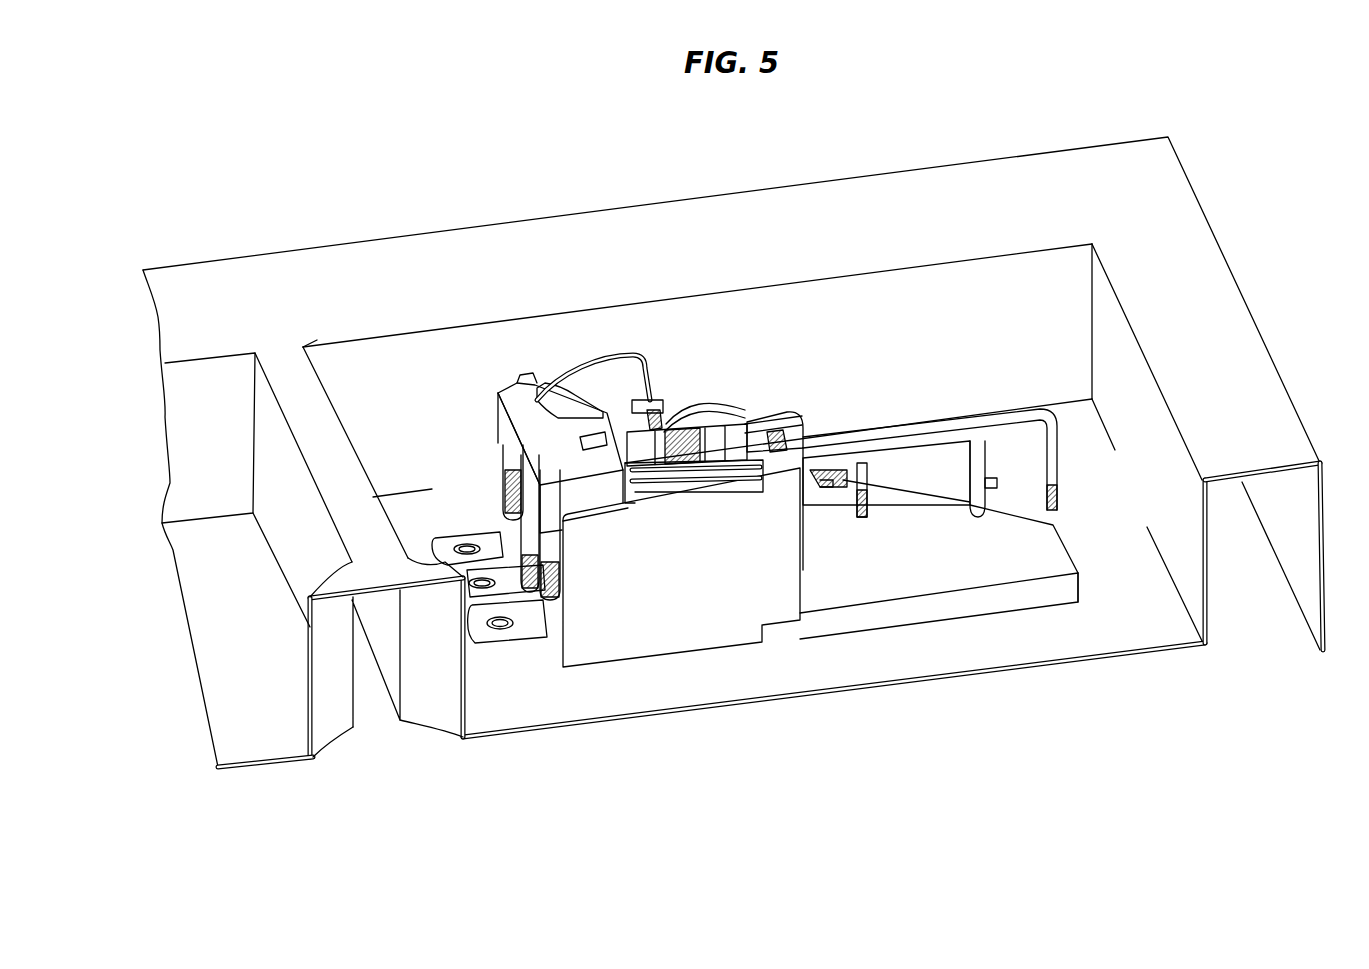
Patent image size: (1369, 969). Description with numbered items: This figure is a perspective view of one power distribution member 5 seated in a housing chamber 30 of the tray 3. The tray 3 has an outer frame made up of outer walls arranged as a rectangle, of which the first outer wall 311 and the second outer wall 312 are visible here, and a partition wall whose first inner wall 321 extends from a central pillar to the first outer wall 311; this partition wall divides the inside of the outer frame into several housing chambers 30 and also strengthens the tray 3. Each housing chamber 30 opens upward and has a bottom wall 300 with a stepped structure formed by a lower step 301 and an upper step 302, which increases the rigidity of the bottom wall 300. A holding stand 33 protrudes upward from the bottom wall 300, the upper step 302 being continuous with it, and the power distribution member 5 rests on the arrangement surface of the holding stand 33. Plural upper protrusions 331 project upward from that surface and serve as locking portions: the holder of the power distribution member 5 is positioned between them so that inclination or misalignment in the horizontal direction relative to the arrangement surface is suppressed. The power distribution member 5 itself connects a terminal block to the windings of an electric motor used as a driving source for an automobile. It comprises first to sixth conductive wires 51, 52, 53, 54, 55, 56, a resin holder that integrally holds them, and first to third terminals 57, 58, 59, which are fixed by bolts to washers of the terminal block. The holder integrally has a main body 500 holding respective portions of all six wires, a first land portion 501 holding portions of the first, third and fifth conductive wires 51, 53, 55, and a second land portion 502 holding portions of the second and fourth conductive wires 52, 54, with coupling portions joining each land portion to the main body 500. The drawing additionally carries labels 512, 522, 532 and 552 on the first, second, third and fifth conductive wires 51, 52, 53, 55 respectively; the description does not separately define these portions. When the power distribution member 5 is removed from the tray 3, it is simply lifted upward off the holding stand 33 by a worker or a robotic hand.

The tray 3 is at (1195, 195).
The housing chamber 30 is at (987, 290).
The bottom wall 300 is at (1160, 492).
The lower step 301 is at (1097, 580).
The upper step 302 is at (1047, 565).
The first outer wall 311 is at (483, 243).
The second outer wall 312 is at (1224, 286).
The first inner wall 321 is at (300, 382).
The holding stand 33 is at (705, 555).
The upper protrusions 331 is at (587, 427).
The power distribution member 5 is at (484, 413).
The main body 500 is at (513, 403).
The first land portion 501 is at (790, 412).
The second land portion 502 is at (662, 400).
The first conductive wire 51 is at (922, 438).
The rod end portion 512 is at (1047, 498).
The second conductive wire 52 is at (750, 414).
The bent portion 522 is at (835, 484).
The third conductive wire 53 is at (883, 457).
The hook portion 532 is at (988, 490).
The fourth conductive wire 54 is at (725, 407).
The fifth conductive wire 55 is at (869, 484).
The pin tip 552 is at (862, 518).
The sixth conductive wire 56 is at (640, 357).
The first terminal 57 is at (507, 640).
The second terminal 58 is at (447, 535).
The third terminal 59 is at (487, 537).